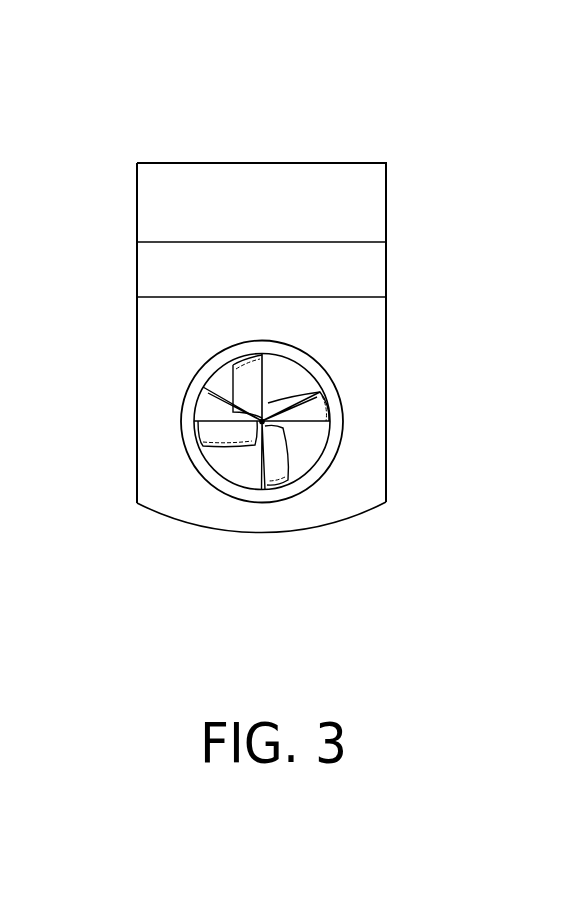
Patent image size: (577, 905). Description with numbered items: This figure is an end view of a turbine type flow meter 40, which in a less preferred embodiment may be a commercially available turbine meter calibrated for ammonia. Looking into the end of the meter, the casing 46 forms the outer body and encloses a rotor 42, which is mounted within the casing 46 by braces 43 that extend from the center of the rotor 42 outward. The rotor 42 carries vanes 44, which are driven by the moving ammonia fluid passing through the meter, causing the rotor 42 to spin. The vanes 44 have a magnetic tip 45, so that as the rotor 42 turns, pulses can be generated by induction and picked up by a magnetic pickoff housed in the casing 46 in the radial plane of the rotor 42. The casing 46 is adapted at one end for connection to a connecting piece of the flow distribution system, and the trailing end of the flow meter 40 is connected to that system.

The flow meter 40 is at (425, 212).
The rotor 42 is at (240, 476).
The braces 43 is at (220, 397).
The vanes 44 is at (313, 412).
The magnetic tip 45 is at (283, 483).
The casing 46 is at (363, 498).